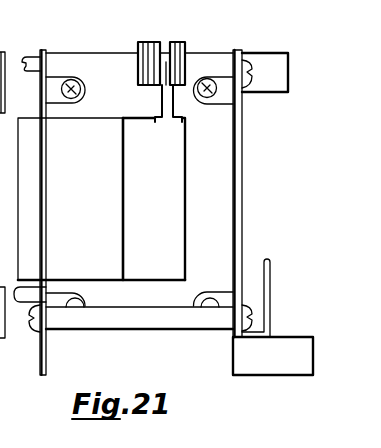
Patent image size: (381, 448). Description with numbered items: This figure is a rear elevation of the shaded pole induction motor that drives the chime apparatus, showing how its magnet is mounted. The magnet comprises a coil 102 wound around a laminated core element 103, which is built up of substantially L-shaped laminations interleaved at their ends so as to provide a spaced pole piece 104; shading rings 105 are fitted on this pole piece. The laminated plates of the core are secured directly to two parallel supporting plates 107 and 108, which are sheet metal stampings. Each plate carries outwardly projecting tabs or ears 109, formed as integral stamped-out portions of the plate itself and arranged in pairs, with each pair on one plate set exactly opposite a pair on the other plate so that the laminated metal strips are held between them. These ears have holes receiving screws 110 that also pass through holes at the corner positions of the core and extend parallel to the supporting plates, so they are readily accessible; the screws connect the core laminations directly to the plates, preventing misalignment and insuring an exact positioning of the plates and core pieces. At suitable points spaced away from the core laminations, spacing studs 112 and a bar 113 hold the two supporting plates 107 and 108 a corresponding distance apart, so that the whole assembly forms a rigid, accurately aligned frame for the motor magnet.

The coil 102 is at (123, 208).
The laminated core element 103 is at (195, 218).
The pole piece 104 is at (181, 120).
The shading rings 105 is at (176, 43).
The supporting plate 107 is at (42, 225).
The supporting plate 108 is at (238, 218).
The tabs or ears 109 is at (55, 82).
The screws 110 is at (68, 86).
The spacing studs 112 is at (139, 318).
The bar 113 is at (161, 88).